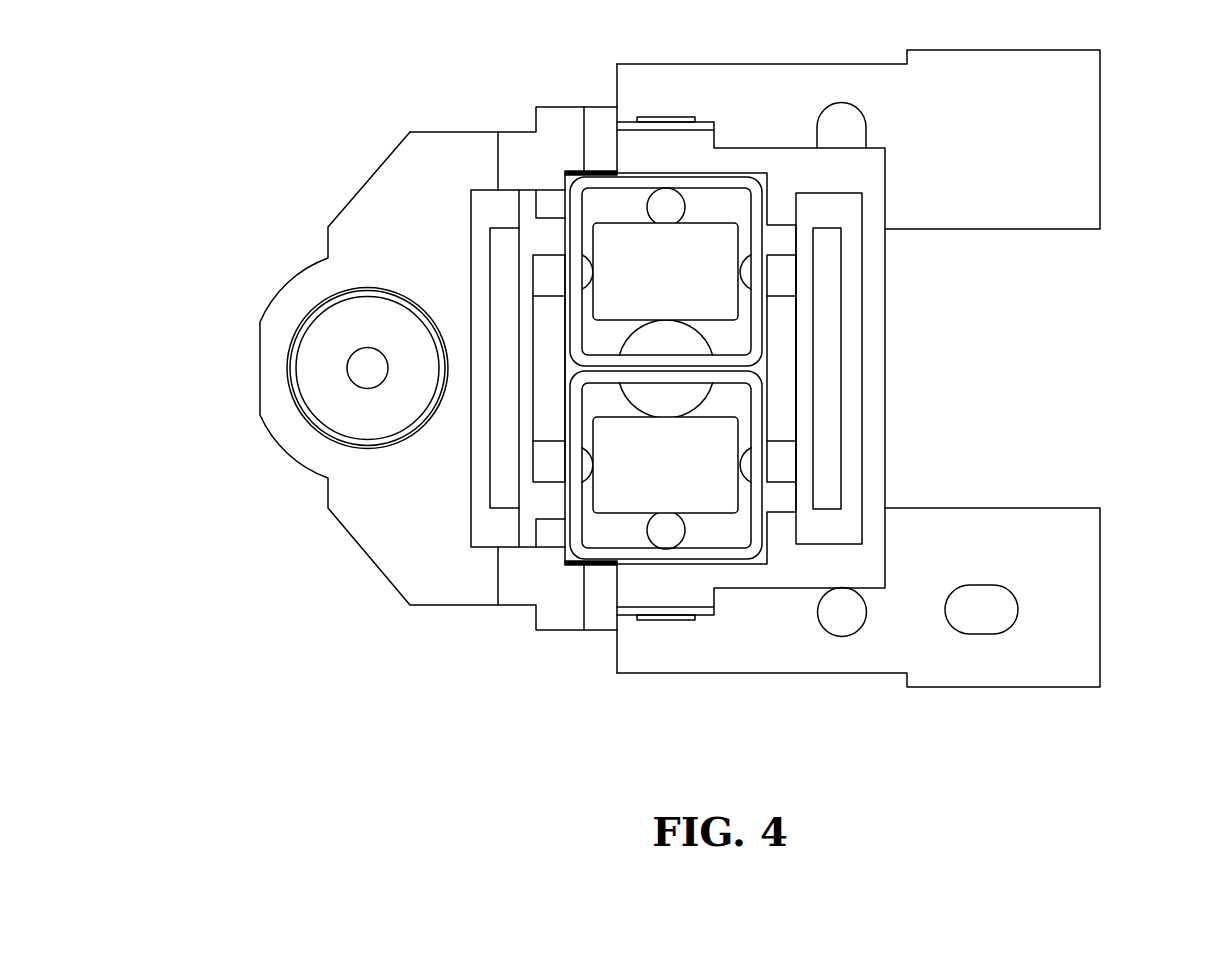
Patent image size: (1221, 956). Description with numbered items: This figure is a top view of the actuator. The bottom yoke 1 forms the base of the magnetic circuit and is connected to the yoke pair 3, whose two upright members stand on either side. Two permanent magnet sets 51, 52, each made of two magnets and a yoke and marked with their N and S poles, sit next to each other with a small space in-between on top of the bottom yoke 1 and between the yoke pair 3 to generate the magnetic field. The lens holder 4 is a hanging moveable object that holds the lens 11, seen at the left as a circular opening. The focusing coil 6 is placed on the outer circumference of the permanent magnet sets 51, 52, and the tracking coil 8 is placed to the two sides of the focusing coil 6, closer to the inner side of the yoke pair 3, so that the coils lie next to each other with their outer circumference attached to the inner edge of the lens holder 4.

The bottom yoke 1 is at (1068, 172).
The yoke pair 3 is at (503, 245).
The lens holder 4 is at (363, 238).
The focusing coil 6 is at (757, 282).
The tracking coil 8 is at (782, 345).
The lens 11 is at (308, 367).
The permanent magnet set 51 is at (622, 498).
The permanent magnet set 52 is at (618, 240).